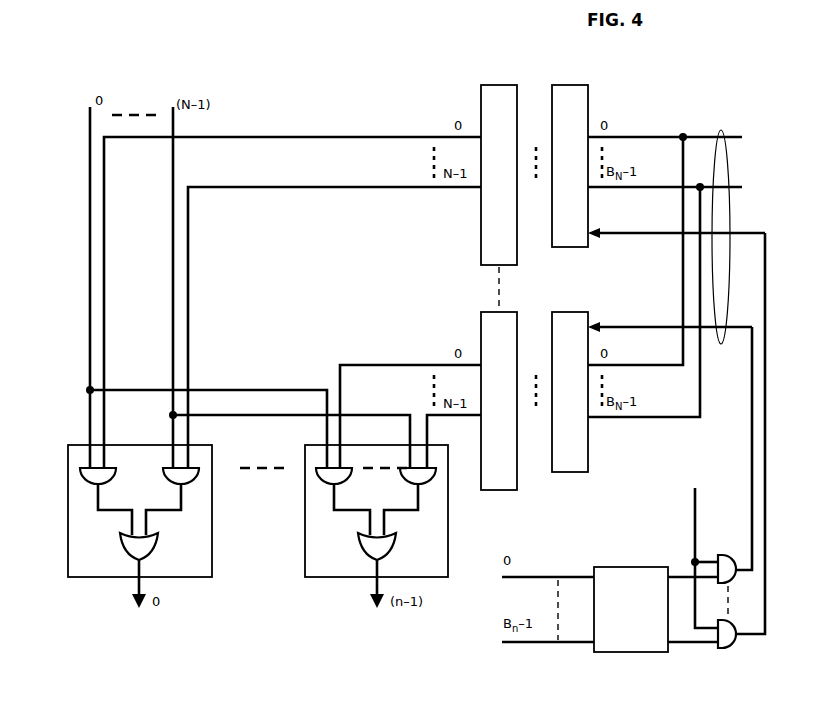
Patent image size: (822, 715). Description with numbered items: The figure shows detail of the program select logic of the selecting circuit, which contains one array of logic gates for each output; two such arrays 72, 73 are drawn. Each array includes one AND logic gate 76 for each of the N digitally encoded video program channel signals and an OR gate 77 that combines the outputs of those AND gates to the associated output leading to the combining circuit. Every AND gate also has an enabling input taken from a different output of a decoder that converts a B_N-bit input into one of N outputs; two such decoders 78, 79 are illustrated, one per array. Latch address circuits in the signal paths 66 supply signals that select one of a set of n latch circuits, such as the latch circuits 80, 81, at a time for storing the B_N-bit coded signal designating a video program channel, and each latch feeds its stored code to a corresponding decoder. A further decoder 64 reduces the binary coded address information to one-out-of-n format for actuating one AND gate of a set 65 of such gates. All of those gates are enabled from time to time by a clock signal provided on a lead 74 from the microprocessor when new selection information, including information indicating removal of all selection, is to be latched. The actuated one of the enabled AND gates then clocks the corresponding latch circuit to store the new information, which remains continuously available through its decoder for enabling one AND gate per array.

The decoder 64 is at (627, 567).
The set of AND gates 65 is at (738, 536).
The signal paths 66 is at (721, 130).
The array of logic gates 72 is at (68, 518).
The array of logic gates 73 is at (305, 518).
The lead 74 is at (695, 509).
The AND logic gate 76 is at (96, 485).
The OR gate 77 is at (124, 552).
The decoder 78 is at (495, 85).
The decoder 79 is at (510, 490).
The latch circuit 80 is at (568, 85).
The latch circuit 81 is at (583, 472).